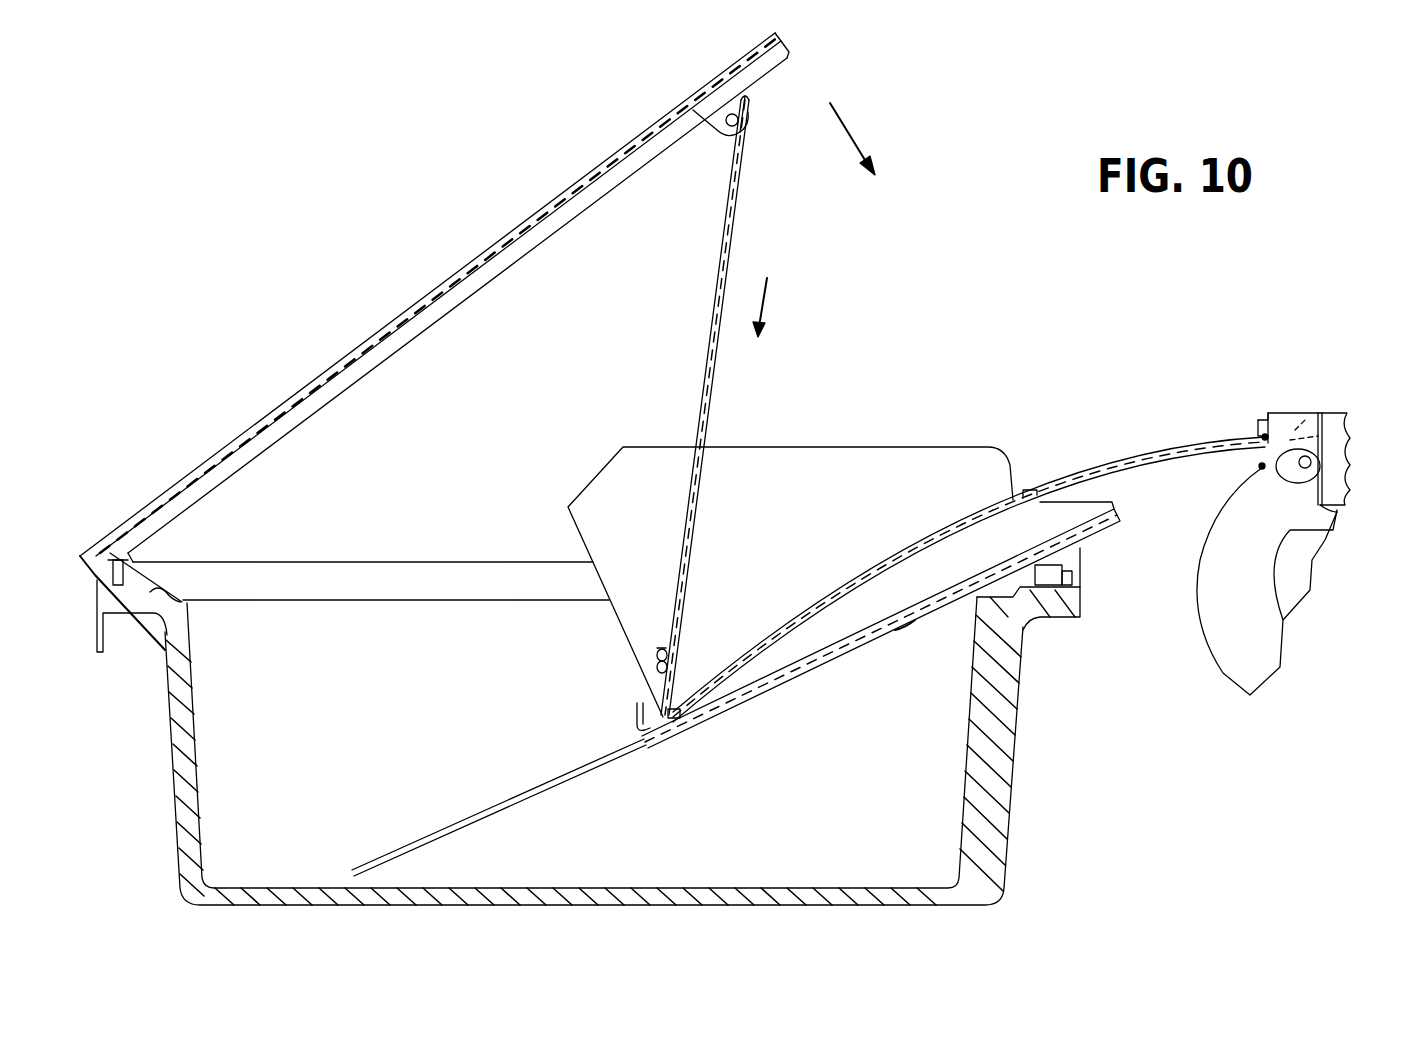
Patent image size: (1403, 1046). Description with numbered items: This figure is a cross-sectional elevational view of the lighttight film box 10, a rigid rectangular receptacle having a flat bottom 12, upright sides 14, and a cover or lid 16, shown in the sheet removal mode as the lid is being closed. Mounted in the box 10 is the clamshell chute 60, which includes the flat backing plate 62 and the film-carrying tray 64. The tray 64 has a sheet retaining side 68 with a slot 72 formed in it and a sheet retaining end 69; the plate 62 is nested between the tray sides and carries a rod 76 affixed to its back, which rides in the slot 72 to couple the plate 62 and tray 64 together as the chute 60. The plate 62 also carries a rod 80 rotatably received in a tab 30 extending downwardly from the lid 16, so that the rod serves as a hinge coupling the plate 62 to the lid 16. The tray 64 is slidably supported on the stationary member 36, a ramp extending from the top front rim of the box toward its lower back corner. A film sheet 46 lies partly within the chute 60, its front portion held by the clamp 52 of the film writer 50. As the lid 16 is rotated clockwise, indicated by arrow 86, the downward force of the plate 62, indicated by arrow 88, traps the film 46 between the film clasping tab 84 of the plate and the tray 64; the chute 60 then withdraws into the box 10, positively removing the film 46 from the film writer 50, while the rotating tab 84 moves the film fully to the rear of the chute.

The box 10 is at (392, 300).
The flat bottom 12 is at (715, 912).
The upright sides 14 is at (1012, 770).
The lid 16 is at (570, 176).
The tabs 30 is at (720, 128).
The stationary member 36 is at (878, 650).
The film sheet 46 is at (1115, 462).
The film writer 50 is at (1325, 392).
The clamp 52 is at (1303, 405).
The clamshell chute 60 is at (973, 398).
The backing plate 62 is at (742, 236).
The film-carrying tray 64 is at (898, 615).
The sheet retaining side 68 is at (850, 455).
The sheet retaining end 69 is at (640, 718).
The slot 72 is at (651, 646).
The rod 76 is at (655, 668).
The rod 80 is at (735, 140).
The film clasping tab 84 is at (680, 700).
The arrow 86 is at (868, 128).
The arrow 88 is at (770, 280).